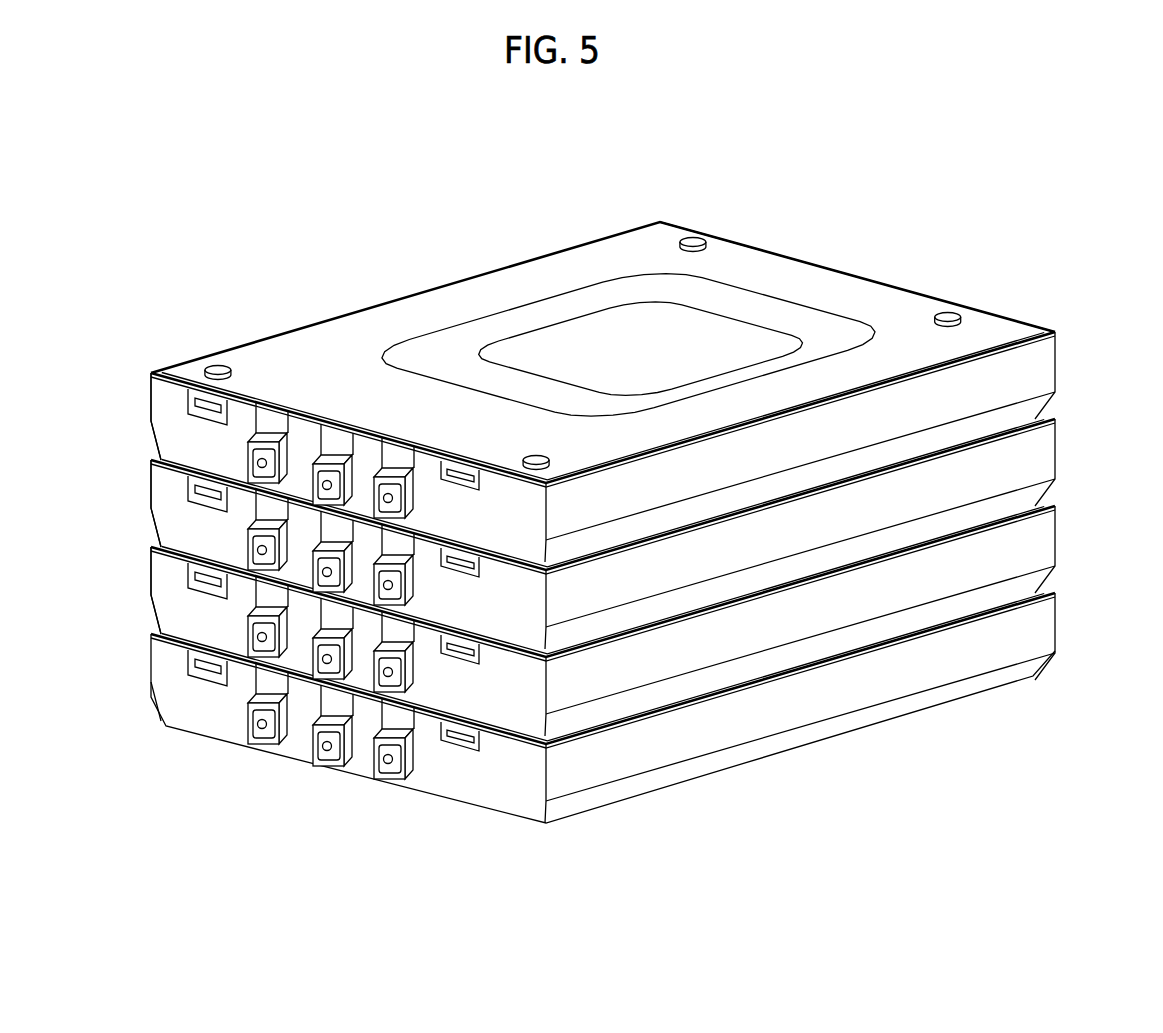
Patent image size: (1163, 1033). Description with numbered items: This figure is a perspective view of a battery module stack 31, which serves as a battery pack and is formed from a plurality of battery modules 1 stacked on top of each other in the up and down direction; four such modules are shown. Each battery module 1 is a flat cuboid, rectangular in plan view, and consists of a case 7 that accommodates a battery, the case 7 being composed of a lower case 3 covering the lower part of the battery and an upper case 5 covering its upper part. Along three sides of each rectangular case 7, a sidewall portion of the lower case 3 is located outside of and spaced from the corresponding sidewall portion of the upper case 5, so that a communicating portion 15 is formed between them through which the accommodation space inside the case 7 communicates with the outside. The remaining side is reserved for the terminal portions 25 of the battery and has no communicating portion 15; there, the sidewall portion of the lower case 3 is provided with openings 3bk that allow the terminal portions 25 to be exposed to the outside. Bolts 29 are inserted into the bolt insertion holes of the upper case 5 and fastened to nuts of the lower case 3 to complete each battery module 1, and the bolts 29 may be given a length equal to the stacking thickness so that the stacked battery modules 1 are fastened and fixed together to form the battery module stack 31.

The battery module stack 31 is at (803, 163).
The battery module 1 is at (1057, 369).
The lower case 3 is at (152, 487).
The opening 3bk is at (270, 690).
The upper case 5 is at (385, 325).
The case 7 is at (148, 388).
The communicating portion 15 is at (470, 280).
The terminal portion 25 is at (252, 733).
The bolt 29 is at (218, 368).